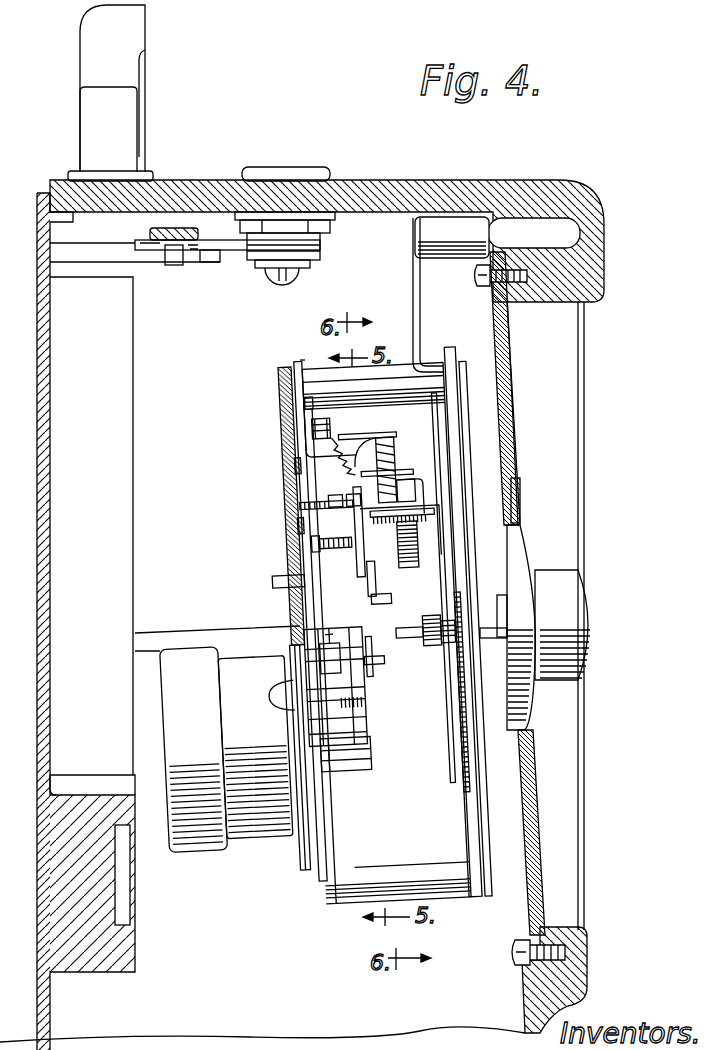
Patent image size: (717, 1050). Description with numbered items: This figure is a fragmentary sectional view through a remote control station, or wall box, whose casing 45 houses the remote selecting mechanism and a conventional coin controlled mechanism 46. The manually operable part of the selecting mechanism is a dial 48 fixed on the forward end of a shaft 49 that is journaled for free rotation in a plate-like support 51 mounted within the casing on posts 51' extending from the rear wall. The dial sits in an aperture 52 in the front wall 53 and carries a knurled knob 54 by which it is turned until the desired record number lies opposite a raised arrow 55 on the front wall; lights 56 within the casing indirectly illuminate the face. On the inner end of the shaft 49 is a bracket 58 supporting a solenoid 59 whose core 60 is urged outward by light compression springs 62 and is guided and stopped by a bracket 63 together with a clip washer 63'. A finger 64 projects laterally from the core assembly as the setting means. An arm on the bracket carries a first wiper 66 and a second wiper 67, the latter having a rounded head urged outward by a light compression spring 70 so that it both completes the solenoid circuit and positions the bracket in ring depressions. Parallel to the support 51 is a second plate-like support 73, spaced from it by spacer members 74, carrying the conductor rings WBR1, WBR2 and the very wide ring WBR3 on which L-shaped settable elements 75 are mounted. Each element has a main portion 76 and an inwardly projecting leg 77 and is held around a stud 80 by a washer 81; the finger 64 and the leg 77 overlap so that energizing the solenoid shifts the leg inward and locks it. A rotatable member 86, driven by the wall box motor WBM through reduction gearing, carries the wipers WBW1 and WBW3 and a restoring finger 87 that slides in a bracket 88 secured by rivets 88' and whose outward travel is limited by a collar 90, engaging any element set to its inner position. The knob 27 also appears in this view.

The operating knob 27 is at (132, 31).
The casing 45 is at (510, 183).
The coin controlled mechanism 46 is at (124, 446).
The dial 48 is at (530, 555).
The shaft 49 is at (492, 618).
The plate-like support 51 is at (454, 557).
The posts 51' is at (217, 621).
The aperture 52 is at (535, 745).
The front wall 53 is at (512, 443).
The knurled knob 54 is at (555, 580).
The raised arrow 55 is at (520, 503).
The lights 56 is at (547, 227).
The bracket 58 is at (430, 512).
The solenoid 59 is at (394, 544).
The core 60 is at (360, 448).
The light compression spring 62 is at (372, 455).
The bracket 63 is at (419, 482).
The clip washer 63' is at (409, 493).
The finger 64 is at (372, 486).
The first wiper 66 is at (445, 620).
The second wiper 67 is at (455, 640).
The light compression spring 70 is at (445, 658).
The second plate-like support 73 is at (280, 396).
The spacer members 74 is at (410, 875).
The settable elements 75 is at (303, 361).
The main portion 76 is at (305, 398).
The leg 77 is at (372, 645).
The stud 80 is at (330, 428).
The washer 81 is at (283, 408).
The rotatable member 86 is at (342, 539).
The restoring finger 87 is at (342, 650).
The bracket 88 is at (324, 667).
The rivets 88' is at (388, 644).
The collar 90 is at (300, 615).
The wall box motor WBM is at (190, 655).
The wall box ring WBR1 is at (292, 548).
The wall box ring WBR2 is at (288, 529).
The wall box ring WBR3 is at (290, 466).
The wiper WBW1 is at (300, 580).
The wiper WBW3 is at (308, 492).